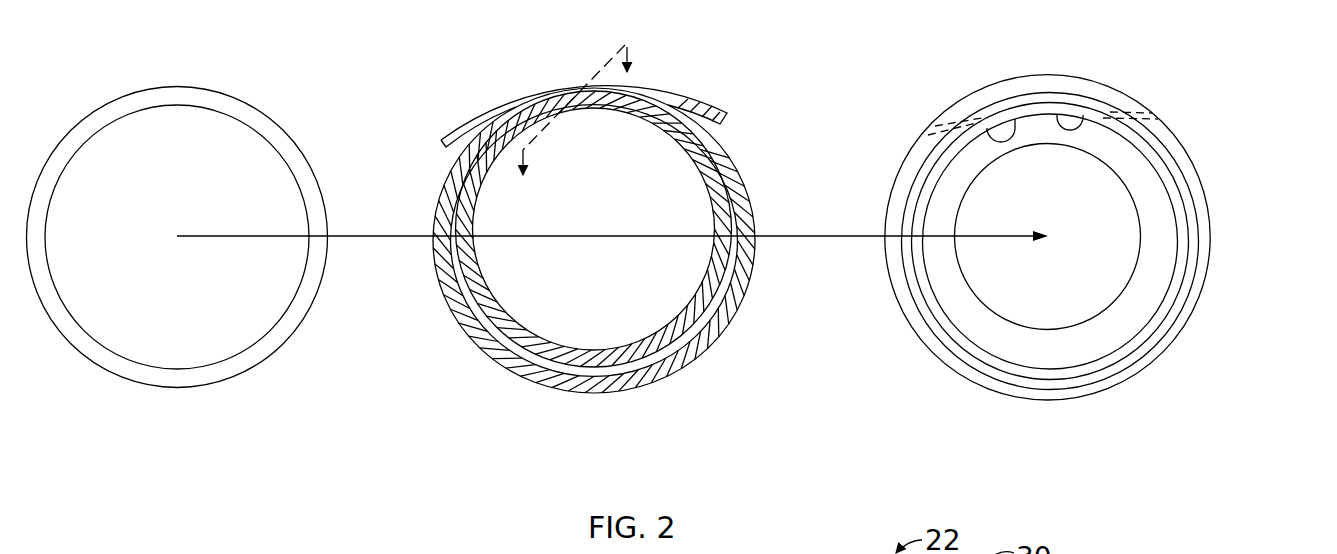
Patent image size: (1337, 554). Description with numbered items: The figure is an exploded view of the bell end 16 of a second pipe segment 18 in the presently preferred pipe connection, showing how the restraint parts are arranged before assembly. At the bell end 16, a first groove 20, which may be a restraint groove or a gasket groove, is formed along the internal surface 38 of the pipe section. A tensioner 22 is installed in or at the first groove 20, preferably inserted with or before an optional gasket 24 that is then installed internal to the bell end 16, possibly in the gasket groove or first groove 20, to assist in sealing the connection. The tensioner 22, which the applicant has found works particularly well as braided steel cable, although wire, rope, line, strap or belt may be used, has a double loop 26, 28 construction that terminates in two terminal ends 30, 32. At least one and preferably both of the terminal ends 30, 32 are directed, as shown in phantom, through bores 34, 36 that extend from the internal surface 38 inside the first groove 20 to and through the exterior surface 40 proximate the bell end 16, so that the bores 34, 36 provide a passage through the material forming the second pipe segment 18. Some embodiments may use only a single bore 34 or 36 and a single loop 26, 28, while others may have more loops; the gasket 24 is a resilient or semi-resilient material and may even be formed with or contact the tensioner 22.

The bell end 16 is at (1130, 366).
The second pipe segment 18 is at (1092, 225).
The first groove 20 is at (1015, 119).
The tensioner 22 is at (598, 242).
The gasket 24 is at (238, 102).
The first loop 26 is at (664, 375).
The second loop 28 is at (586, 354).
The first terminal end 30 is at (598, 134).
The second terminal end 32 is at (446, 146).
The first bore 34 is at (1130, 112).
The second bore 36 is at (935, 128).
The internal surface 38 is at (1083, 115).
The exterior surface 40 is at (1200, 170).